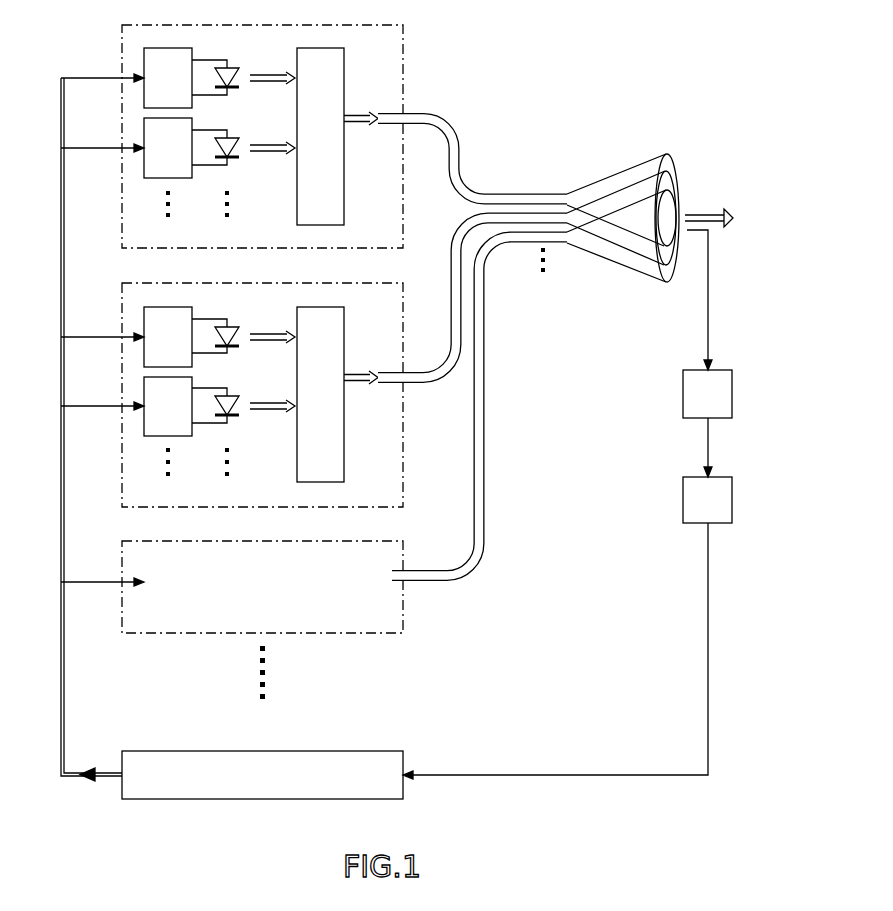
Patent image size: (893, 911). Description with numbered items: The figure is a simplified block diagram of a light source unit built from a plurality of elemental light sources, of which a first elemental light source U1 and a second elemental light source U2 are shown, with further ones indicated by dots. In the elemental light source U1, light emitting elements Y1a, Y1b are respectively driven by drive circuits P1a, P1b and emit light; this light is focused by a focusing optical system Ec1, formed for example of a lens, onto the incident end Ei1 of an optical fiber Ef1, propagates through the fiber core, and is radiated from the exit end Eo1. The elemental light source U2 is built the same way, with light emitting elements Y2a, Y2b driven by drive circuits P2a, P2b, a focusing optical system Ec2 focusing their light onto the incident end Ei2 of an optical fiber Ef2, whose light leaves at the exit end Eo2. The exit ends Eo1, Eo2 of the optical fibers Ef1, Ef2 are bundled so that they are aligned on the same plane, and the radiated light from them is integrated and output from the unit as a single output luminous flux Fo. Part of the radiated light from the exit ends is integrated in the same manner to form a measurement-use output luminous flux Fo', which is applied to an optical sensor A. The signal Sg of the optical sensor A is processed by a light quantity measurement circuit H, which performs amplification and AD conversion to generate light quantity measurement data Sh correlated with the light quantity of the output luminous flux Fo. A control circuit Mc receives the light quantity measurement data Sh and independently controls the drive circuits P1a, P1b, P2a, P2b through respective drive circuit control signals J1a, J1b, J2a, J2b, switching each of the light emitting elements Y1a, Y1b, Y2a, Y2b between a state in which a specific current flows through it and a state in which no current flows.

The elemental light source U1 is at (377, 236).
The drive circuit control signal J1a is at (80, 78).
The drive circuit control signal J1b is at (80, 148).
The drive circuit P1a is at (168, 78).
The drive circuit P1b is at (168, 148).
The light emitting element Y1a is at (237, 70).
The light emitting element Y1b is at (237, 140).
The focusing optical system Ec1 is at (320, 136).
The incident end Ei1 is at (378, 112).
The optical fiber Ef1 is at (440, 112).
The elemental light source U2 is at (377, 493).
The drive circuit control signal J2a is at (80, 337).
The drive circuit control signal J2b is at (80, 406).
The drive circuit P2a is at (168, 337).
The drive circuit P2b is at (168, 406).
The light emitting element Y2a is at (237, 326).
The light emitting element Y2b is at (237, 395).
The focusing optical system Ec2 is at (320, 394).
The incident end Ei2 is at (378, 371).
The optical fiber Ef2 is at (442, 384).
The exit end Eo1 is at (596, 196).
The exit end Eo2 is at (618, 204).
The output luminous flux Fo is at (709, 195).
The measurement-use output luminous flux Fo' is at (674, 300).
The optical sensor A is at (707, 394).
The signal of the optical sensor Sg is at (708, 440).
The light quantity measurement circuit H is at (707, 500).
The light quantity measurement data Sh is at (663, 775).
The control circuit Mc is at (262, 775).